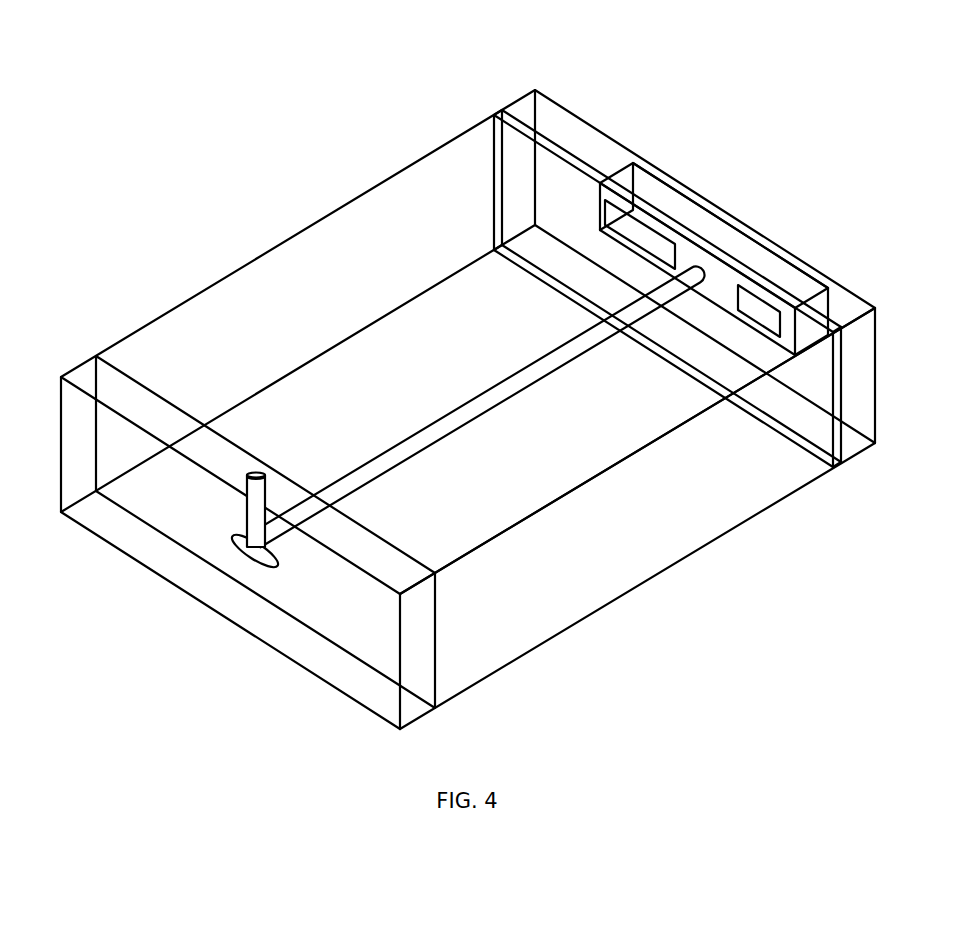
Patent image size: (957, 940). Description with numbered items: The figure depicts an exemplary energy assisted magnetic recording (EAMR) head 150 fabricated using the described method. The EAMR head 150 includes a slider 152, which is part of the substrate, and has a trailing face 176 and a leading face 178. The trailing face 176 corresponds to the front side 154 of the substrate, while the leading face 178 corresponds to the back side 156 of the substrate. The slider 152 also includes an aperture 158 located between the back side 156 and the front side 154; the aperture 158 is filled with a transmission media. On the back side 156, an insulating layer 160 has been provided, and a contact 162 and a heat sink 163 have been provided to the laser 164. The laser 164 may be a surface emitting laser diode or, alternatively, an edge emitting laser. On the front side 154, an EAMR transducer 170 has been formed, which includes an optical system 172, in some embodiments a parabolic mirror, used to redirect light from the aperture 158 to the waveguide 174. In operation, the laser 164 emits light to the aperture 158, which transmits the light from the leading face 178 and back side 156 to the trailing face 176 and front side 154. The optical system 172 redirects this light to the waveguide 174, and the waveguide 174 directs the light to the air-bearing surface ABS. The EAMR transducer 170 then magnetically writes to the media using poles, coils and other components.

The EAMR head 150 is at (448, 30).
The slider 152 is at (283, 243).
The front side 154 is at (151, 366).
The back side 156 is at (472, 160).
The aperture 158 is at (568, 364).
The insulating layer 160 is at (494, 115).
The contact 162 is at (776, 291).
The heat sink 163 is at (601, 222).
The laser 164 is at (663, 181).
The EAMR transducer 170 is at (150, 568).
The optical system 172 is at (252, 568).
The waveguide 174 is at (247, 513).
The trailing face 176 is at (295, 686).
The leading face 178 is at (720, 186).
The air-bearing surface ABS is at (331, 168).